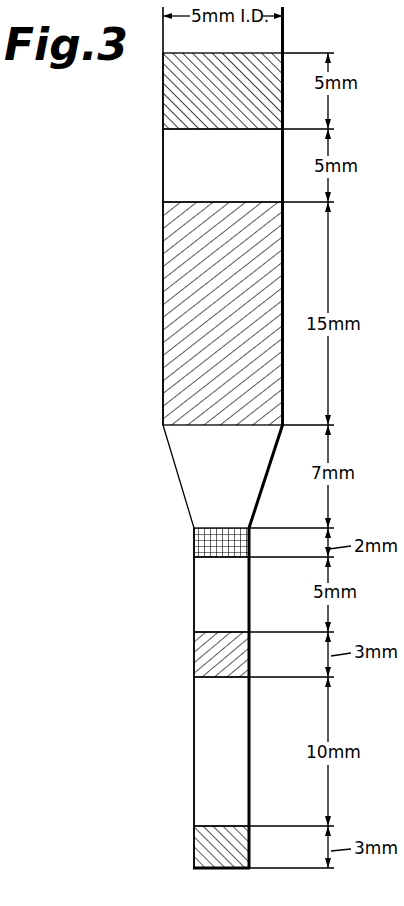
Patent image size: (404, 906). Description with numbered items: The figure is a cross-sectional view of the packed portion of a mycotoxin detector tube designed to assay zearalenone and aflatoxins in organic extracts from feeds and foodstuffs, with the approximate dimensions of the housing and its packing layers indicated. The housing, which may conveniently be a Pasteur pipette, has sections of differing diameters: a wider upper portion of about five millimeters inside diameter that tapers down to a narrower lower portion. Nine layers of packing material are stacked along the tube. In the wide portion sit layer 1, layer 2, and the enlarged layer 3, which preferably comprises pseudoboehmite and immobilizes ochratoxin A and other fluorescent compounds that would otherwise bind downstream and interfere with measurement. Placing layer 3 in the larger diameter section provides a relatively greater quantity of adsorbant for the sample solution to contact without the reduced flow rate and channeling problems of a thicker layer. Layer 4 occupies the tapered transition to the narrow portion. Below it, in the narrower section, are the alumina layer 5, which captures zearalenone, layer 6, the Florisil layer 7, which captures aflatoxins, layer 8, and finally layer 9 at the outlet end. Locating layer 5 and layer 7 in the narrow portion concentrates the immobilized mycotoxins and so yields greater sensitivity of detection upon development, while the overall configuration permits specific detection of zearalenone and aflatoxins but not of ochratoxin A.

The layer 1 is at (161, 88).
The layer 2 is at (161, 164).
The layer 3 is at (161, 305).
The layer 4 is at (177, 478).
The layer 5 is at (192, 545).
The layer 6 is at (192, 600).
The layer 7 is at (192, 652).
The layer 8 is at (190, 748).
The layer 9 is at (190, 845).